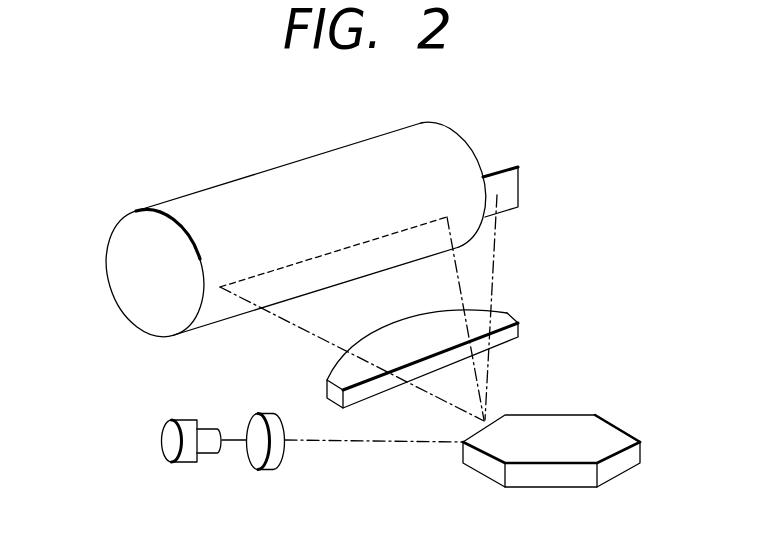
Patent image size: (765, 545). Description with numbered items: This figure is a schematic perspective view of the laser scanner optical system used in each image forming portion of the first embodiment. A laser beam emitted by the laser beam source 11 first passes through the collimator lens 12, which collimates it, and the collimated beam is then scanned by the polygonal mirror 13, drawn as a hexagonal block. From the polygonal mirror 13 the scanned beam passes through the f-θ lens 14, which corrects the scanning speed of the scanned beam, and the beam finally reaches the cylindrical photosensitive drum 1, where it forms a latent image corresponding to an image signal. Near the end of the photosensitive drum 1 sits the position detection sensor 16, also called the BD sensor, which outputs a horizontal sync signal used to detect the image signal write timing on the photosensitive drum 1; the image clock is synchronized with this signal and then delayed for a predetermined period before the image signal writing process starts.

The photosensitive drum 1 is at (123, 297).
The laser beam source 11 is at (162, 451).
The collimator lens 12 is at (254, 458).
The polygonal mirror 13 is at (476, 463).
The f-θ lens 14 is at (507, 313).
The position detection sensor 16 is at (515, 189).